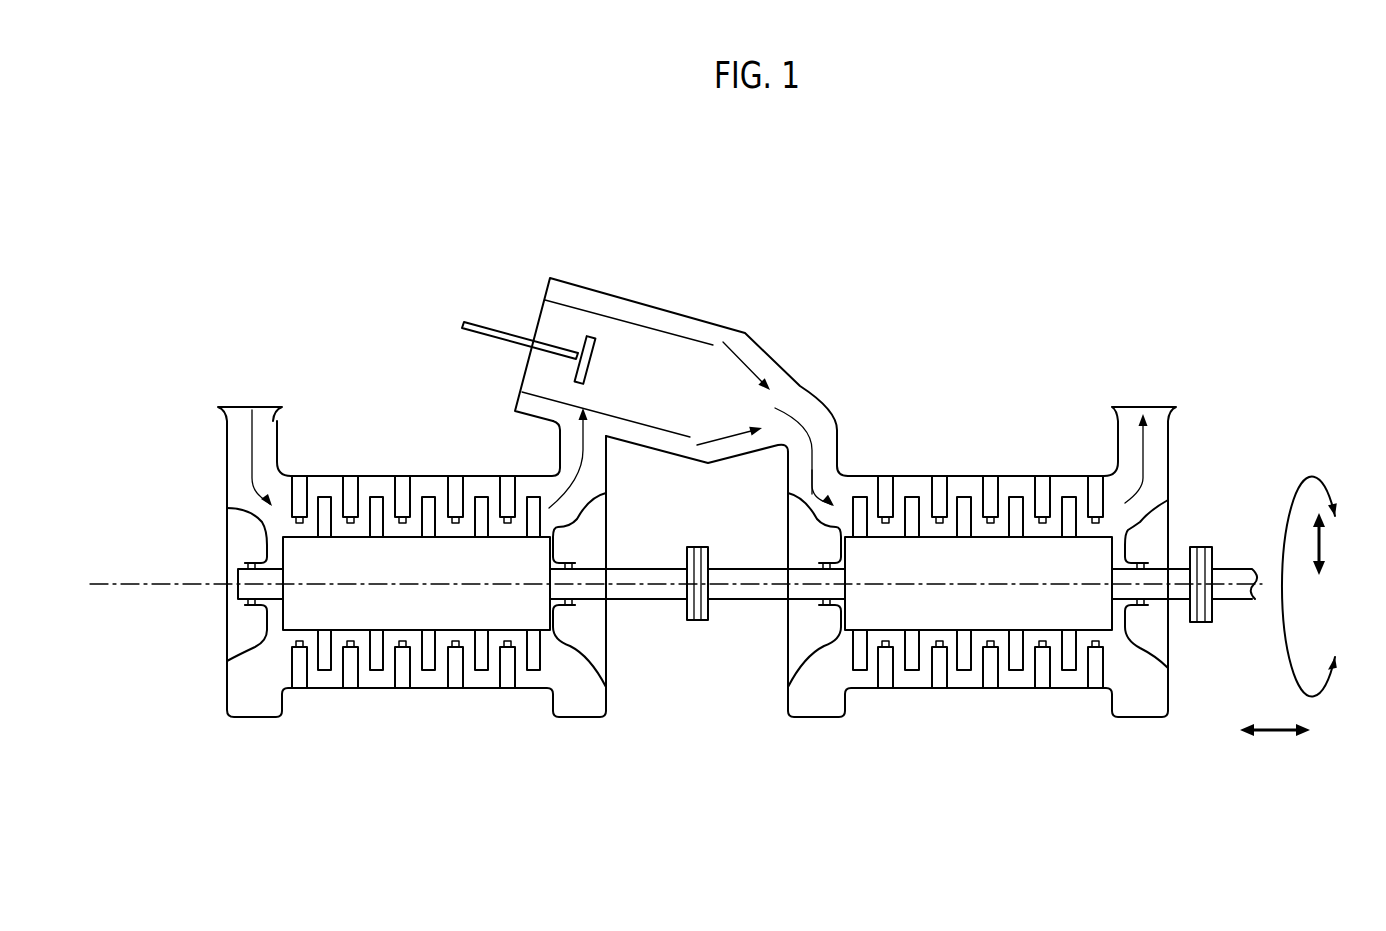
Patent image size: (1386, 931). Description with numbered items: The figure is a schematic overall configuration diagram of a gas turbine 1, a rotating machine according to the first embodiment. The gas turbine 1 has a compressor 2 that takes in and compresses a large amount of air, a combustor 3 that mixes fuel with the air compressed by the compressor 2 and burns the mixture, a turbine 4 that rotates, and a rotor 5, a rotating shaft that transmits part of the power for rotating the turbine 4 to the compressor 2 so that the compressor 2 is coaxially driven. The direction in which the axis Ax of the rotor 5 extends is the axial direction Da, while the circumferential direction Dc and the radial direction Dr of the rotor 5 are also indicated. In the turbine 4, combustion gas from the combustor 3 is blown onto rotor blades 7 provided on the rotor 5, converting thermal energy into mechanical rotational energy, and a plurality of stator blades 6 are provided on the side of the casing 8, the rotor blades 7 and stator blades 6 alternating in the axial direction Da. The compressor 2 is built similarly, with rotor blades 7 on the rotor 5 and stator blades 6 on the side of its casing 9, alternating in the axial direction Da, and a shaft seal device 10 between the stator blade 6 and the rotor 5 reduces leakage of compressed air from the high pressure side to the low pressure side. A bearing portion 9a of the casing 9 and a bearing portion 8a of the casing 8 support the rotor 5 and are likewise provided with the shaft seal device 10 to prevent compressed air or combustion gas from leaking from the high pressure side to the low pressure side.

The gas turbine 1 is at (1100, 318).
The compressor 2 is at (227, 752).
The combustor 3 is at (532, 250).
The turbine 4 is at (788, 752).
The rotor 5 is at (727, 600).
The stator blades 6 is at (403, 497).
The rotor blades 7 is at (378, 492).
The casing 8 is at (908, 690).
The bearing portion 8a is at (820, 647).
The casing 9 is at (350, 690).
The bearing portion 9a is at (247, 527).
The shaft seal device 10 is at (400, 523).
The axis Ax is at (119, 580).
The circumferential direction Dc is at (1318, 477).
The radial direction Dr is at (1323, 547).
The axial direction Da is at (1275, 751).